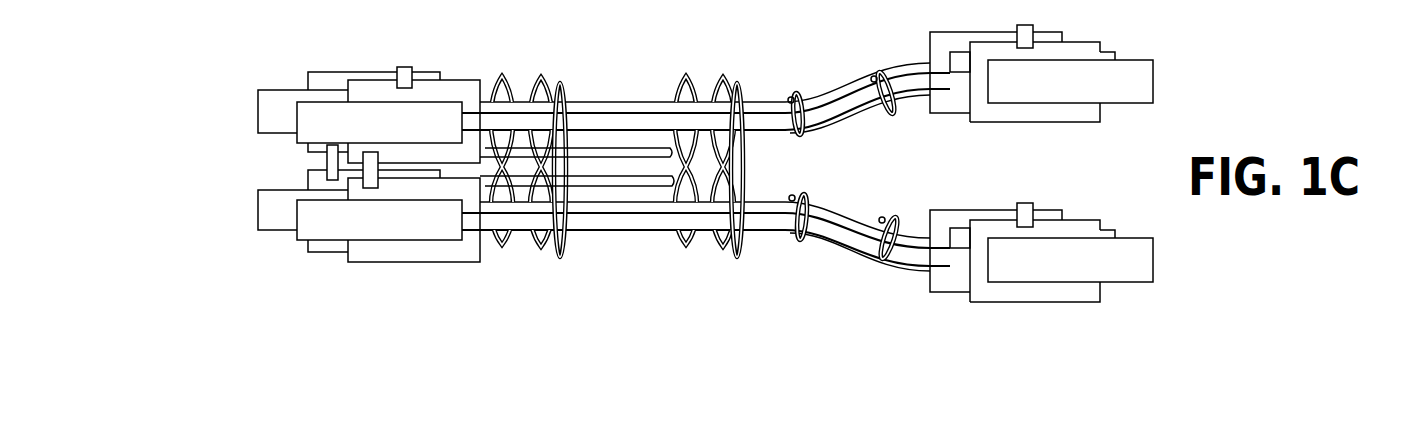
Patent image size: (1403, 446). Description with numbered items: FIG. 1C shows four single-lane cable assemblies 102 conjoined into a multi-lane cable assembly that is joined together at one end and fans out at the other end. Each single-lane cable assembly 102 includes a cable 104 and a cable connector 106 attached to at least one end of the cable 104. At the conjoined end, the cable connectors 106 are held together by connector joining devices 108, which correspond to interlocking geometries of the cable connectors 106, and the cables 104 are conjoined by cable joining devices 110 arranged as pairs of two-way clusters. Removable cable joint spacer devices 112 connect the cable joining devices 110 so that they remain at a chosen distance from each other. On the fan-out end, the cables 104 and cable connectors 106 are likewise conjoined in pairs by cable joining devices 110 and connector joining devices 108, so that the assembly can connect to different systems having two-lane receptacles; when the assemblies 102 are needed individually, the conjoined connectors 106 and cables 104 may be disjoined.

The 1-lane cable assembly 102 is at (301, 155).
The cable 104 is at (706, 166).
The cable connector 106 is at (953, 32).
The connector joining device 108 is at (678, 113).
The cable joining device 110 is at (693, 166).
The removable cable joint spacer device 112 is at (577, 168).